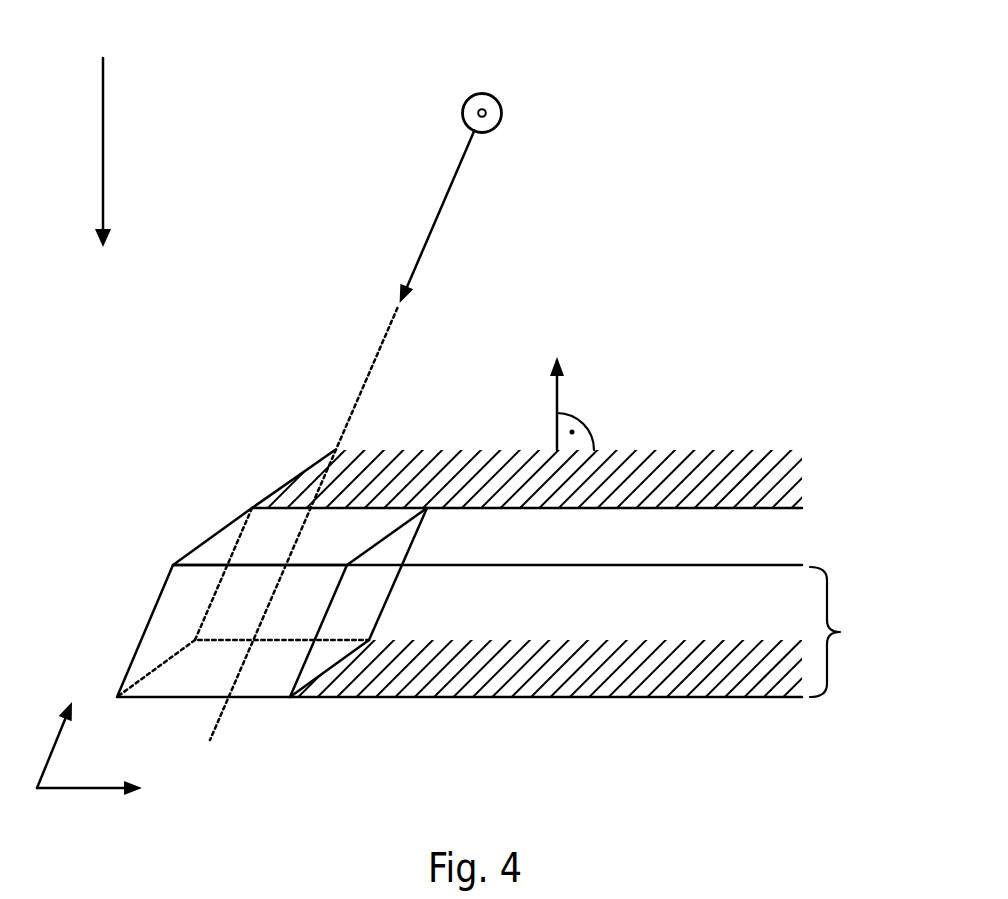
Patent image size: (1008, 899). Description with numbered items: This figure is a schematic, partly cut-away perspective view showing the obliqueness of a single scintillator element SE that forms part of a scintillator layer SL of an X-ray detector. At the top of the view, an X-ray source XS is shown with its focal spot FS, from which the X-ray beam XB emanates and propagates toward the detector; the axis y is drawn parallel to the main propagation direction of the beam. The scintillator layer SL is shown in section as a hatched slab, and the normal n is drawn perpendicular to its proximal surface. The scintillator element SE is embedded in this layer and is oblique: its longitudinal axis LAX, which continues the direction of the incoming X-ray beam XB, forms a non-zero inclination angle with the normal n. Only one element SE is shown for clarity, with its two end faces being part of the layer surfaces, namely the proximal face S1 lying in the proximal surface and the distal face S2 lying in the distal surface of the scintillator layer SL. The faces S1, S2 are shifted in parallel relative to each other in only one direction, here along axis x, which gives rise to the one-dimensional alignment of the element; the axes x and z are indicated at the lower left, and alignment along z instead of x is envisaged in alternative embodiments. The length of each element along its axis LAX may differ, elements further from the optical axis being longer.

The X-ray source XS is at (501, 109).
The focal spot FS is at (478, 108).
The X-ray beam XB is at (437, 210).
The longitudinal axis LAX is at (360, 395).
The scintillator element SE is at (258, 635).
The proximal face S1 is at (217, 549).
The distal face S2 is at (265, 675).
The scintillator layer SL is at (857, 624).
The normal n is at (572, 403).
The axis x is at (89, 804).
The axis y is at (84, 152).
The axis z is at (45, 745).